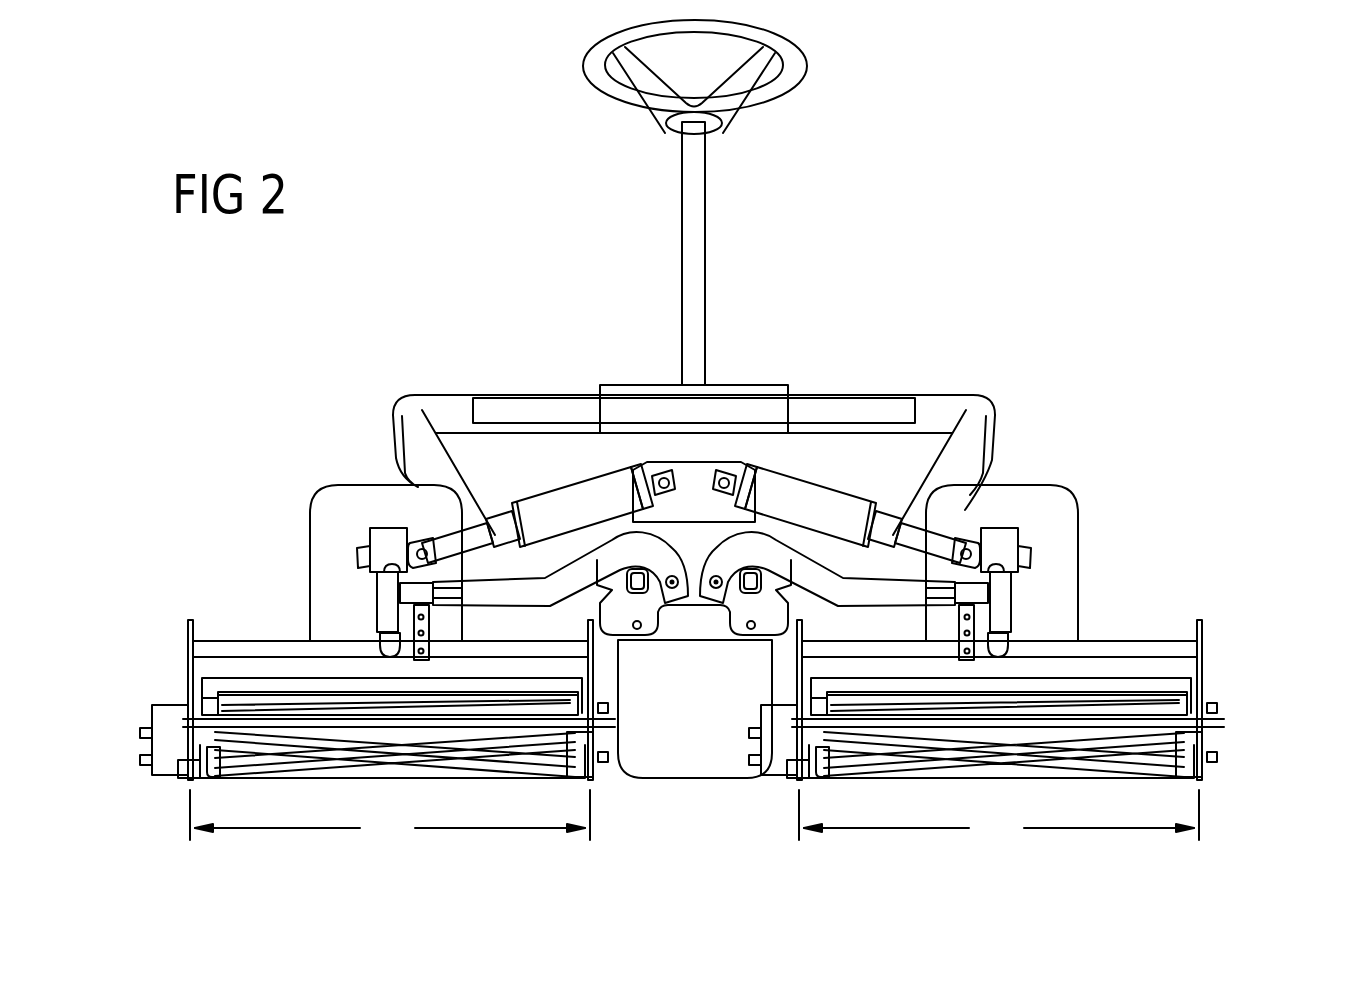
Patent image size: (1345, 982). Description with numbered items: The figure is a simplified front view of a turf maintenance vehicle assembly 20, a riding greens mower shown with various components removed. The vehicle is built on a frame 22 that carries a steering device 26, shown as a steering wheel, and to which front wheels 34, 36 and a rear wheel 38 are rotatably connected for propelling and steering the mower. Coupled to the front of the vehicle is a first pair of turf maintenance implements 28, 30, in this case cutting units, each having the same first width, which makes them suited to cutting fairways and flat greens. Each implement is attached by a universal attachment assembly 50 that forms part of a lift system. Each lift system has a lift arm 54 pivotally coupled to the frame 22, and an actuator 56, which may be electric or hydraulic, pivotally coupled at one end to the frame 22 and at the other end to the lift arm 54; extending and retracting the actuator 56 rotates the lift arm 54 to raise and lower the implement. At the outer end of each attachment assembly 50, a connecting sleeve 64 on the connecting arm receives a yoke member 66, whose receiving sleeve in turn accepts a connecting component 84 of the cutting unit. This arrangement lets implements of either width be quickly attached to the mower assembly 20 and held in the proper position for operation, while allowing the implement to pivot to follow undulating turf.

The turf maintenance vehicle assembly 20 is at (1078, 288).
The frame 22 is at (978, 412).
The steering device 26 is at (758, 105).
The turf maintenance implement 28 is at (1255, 690).
The turf maintenance implement 30 is at (147, 676).
The front wheel 34 is at (1060, 502).
The front wheel 36 is at (332, 502).
The rear wheel 38 is at (694, 755).
The universal attachment assembly 50 is at (363, 523).
The lift arm weldment 54 is at (575, 577).
The actuator 56 is at (607, 492).
The connecting sleeve 64 is at (378, 587).
The yoke member 66 is at (375, 600).
The connecting component 84 is at (378, 632).